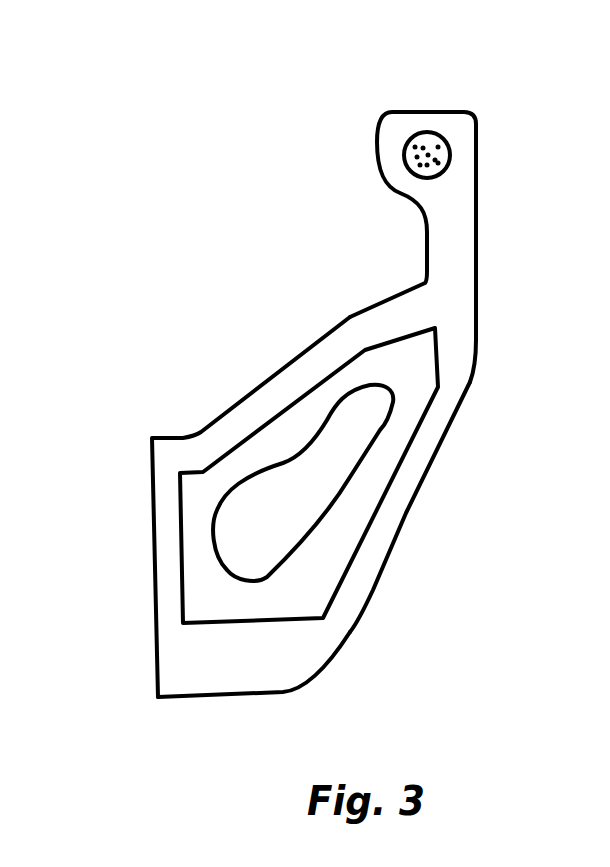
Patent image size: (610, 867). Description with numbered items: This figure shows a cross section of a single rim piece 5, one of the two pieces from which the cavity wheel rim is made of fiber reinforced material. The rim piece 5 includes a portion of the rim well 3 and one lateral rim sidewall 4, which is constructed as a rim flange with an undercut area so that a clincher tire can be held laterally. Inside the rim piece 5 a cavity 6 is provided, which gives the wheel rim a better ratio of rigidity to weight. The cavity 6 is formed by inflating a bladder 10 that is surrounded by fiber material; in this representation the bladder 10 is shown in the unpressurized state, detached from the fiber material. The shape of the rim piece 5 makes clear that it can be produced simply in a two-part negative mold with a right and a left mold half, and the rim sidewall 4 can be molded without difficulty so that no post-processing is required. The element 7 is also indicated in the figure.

The rim well 3 is at (311, 424).
The rim sidewall 4 is at (457, 250).
The rim piece 5 is at (180, 708).
The cavity 6 is at (313, 583).
The fastening hole 7 is at (427, 143).
The bladder 10 is at (350, 473).